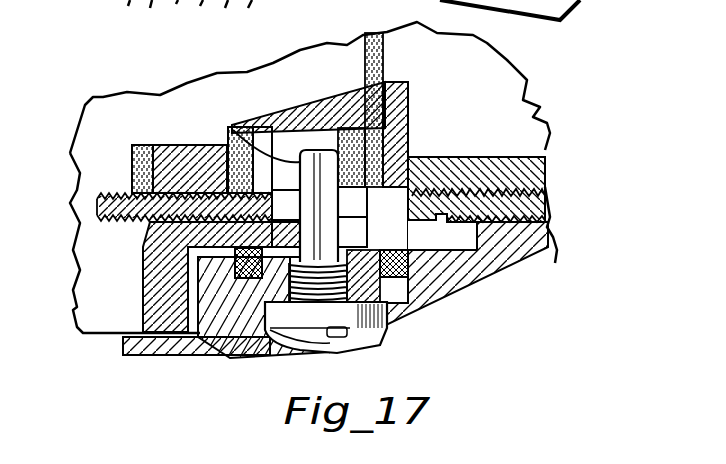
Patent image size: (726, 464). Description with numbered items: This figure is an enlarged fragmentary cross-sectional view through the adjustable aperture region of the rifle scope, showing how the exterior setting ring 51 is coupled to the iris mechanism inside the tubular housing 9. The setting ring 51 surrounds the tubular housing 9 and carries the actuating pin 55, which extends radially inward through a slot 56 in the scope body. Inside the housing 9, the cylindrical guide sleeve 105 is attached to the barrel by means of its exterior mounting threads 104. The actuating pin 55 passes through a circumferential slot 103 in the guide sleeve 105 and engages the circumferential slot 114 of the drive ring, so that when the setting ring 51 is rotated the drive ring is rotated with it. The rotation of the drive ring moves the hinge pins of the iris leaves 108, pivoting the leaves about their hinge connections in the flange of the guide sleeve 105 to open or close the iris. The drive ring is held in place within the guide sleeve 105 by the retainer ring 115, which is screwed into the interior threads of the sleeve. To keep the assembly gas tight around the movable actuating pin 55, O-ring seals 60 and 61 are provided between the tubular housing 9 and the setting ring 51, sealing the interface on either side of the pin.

The tubular housing 9 is at (535, 207).
The setting ring 51 is at (445, 302).
The actuating pin 55 is at (228, 133).
The slot 56 is at (239, 337).
The O-ring seal 60 is at (177, 349).
The O-ring seal 61 is at (403, 297).
The circumferential slot 103 is at (300, 218).
The exterior mounting threads 104 is at (165, 219).
The cylindrical guide sleeve 105 is at (410, 93).
The iris leaves 108 is at (366, 38).
The circumferential slot 114 is at (281, 137).
The retainer ring 115 is at (157, 143).